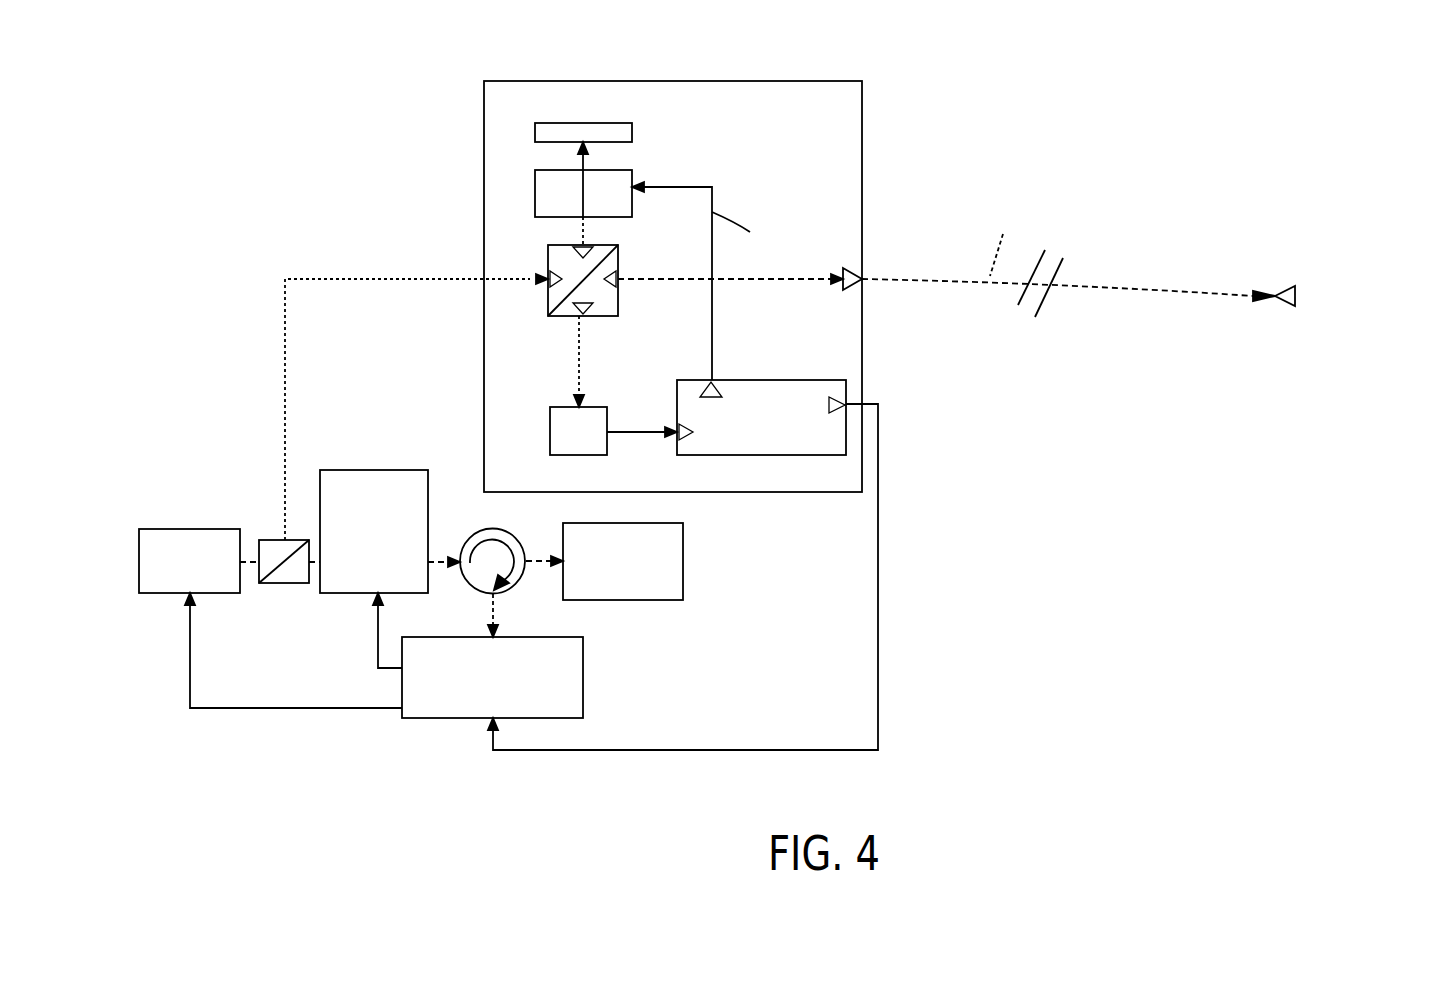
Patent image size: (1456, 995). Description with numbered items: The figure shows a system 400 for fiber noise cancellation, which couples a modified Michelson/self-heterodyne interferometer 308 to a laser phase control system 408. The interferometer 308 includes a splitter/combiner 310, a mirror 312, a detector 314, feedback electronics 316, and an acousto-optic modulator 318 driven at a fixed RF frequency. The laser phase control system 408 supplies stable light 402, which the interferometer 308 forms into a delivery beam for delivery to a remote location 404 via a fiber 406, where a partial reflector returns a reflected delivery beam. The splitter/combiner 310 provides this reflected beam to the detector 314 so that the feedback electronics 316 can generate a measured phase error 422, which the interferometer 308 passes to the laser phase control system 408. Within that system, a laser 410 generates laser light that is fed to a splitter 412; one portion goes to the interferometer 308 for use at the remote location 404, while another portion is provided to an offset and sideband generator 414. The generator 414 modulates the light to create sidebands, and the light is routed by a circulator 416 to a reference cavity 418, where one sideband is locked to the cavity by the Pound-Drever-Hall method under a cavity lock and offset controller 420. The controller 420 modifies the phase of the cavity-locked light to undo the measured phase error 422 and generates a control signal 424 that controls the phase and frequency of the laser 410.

The modified Michelson/self-heterodyne interferometer 308 is at (862, 137).
The splitter/combiner 310 is at (618, 262).
The mirror 312 is at (632, 133).
The detector 314 is at (555, 405).
The feedback electronics 316 is at (786, 378).
The acousto-optic modulator (AOM) 318 is at (632, 180).
The system 400 is at (1272, 130).
The stable light 402 is at (360, 277).
The remote location 404 is at (1284, 288).
The fiber 406 is at (1143, 292).
The laser phase control system 408 is at (135, 500).
The laser 410 is at (190, 527).
The splitter 412 is at (270, 538).
The offset and sideband generator 414 is at (373, 468).
The circulator 416 is at (472, 532).
The reference cavity 418 is at (683, 565).
The cavity lock and offset controller 420 is at (583, 680).
The measured phase error 422 is at (878, 598).
The control signal 424 is at (285, 710).